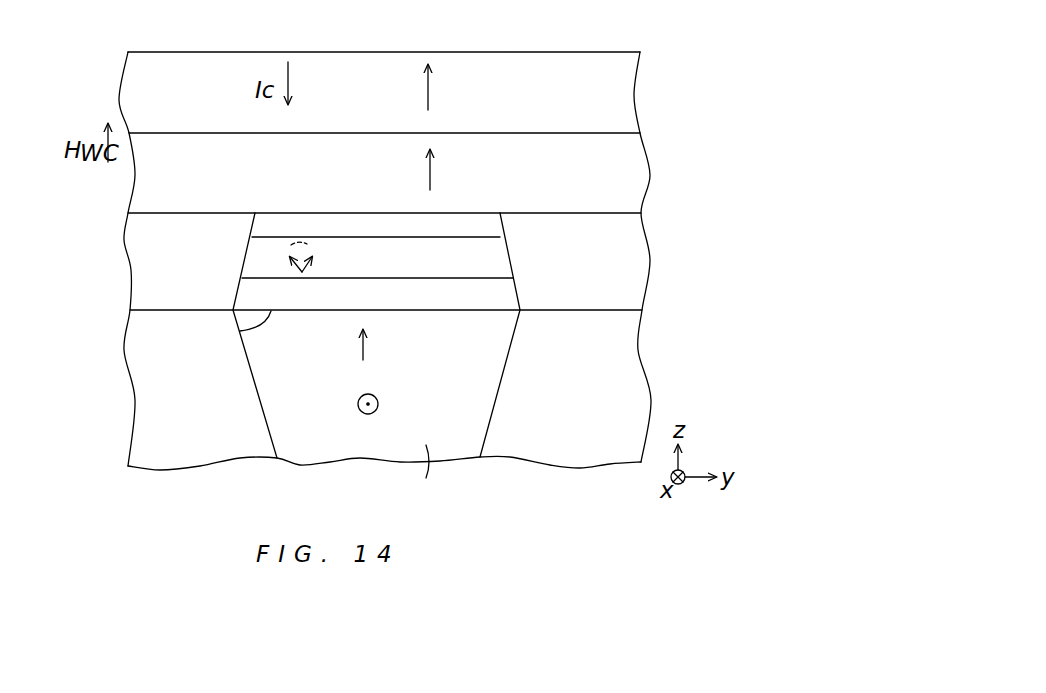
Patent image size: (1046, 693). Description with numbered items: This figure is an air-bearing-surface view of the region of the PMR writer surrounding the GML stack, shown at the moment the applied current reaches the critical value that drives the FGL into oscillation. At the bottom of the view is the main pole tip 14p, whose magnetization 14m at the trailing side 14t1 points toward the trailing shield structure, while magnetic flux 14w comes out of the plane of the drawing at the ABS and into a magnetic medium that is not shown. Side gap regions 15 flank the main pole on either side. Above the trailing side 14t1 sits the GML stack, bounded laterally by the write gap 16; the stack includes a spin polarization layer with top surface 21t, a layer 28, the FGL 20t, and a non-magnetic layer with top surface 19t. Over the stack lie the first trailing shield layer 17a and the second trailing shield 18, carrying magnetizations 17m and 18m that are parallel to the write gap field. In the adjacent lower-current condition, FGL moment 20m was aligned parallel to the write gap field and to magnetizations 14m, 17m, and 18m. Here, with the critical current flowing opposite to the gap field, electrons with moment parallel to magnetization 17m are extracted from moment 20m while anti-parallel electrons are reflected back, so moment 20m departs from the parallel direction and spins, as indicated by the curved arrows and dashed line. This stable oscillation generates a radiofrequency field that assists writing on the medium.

The second trailing shield 18 is at (618, 92).
The first trailing shield layer 17a is at (630, 171).
The first non-magnetic layer top surface 19t is at (483, 225).
The write gap 16 is at (157, 227).
The seed layer 28 is at (520, 280).
The spin polarization layer top surface 21t is at (500, 297).
The flux guiding layer (FGL) 20t is at (267, 259).
The trailing side 14t1 is at (240, 331).
The side gap 15 is at (160, 405).
The main pole tip 14p is at (434, 477).
The magnetic flux 14w is at (347, 405).
The main pole magnetization 14m is at (394, 346).
The FGL moment 20m is at (331, 257).
The first trailing shield magnetization 17m is at (462, 170).
The second trailing shield magnetization 18m is at (460, 87).